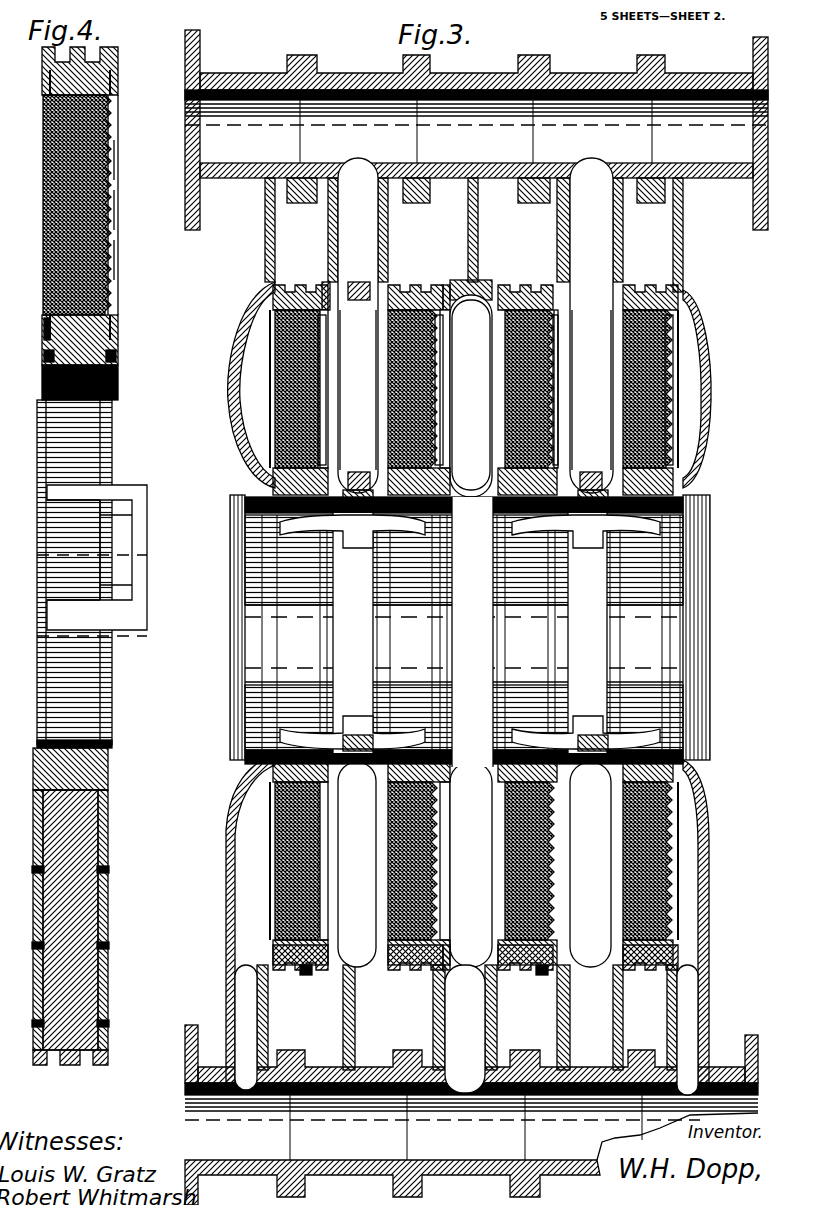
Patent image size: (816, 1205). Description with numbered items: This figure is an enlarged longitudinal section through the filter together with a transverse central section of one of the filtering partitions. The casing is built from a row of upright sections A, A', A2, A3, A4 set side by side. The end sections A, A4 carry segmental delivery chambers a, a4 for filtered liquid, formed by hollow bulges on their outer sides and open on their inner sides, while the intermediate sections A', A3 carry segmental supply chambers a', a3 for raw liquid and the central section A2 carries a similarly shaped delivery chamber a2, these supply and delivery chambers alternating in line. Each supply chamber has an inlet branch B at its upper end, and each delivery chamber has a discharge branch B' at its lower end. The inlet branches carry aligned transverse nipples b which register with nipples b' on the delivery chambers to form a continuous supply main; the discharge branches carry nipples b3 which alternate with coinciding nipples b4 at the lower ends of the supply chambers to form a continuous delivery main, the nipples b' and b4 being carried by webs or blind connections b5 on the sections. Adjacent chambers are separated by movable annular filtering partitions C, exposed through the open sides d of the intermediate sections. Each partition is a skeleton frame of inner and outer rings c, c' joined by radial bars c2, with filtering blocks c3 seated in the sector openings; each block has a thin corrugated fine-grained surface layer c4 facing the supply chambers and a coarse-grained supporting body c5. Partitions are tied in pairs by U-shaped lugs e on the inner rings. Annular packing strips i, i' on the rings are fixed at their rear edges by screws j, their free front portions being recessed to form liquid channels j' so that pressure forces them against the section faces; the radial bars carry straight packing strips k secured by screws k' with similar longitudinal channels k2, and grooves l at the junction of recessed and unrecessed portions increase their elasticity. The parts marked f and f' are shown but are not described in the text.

In FIG. 3, the end section A is at (248, 385).
In FIG. 3, the intermediate section A' is at (357, 640).
In FIG. 3, the central section A2 is at (471, 631).
In FIG. 3, the intermediate section A3 is at (590, 639).
In FIG. 3, the end section A4 is at (707, 389).
In FIG. 3, the delivery chamber a is at (258, 625).
In FIG. 3, the supply chamber a' is at (358, 596).
In FIG. 3, the delivery chamber a2 is at (471, 590).
In FIG. 3, the supply chamber a3 is at (591, 596).
In FIG. 3, the delivery chamber a4 is at (690, 625).
In FIG. 3, the inlet branch B is at (475, 325).
In FIG. 3, the discharge branch B' is at (466, 1030).
In FIG. 3, the transverse nipple b is at (476, 151).
In FIG. 3, the nipple b' is at (476, 109).
In FIG. 3, the transverse nipple b3 is at (471, 1099).
In FIG. 3, the nipple b4 is at (471, 1150).
In FIG. 3, the web b5 is at (683, 238).
In FIG. 3, the inner ring c is at (475, 634).
In FIG. 4, the inner ring c is at (92, 71).
In FIG. 3, the outer ring c' is at (470, 634).
In FIG. 4, the outer ring c' is at (92, 357).
In FIG. 3, the radial bar c2 is at (520, 282).
In FIG. 4, the radial bar c2 is at (44, 912).
In FIG. 3, the filtering block c3 is at (326, 420).
In FIG. 4, the filtering block c3 is at (116, 252).
In FIG. 3, the corrugated surface layer c4 is at (326, 356).
In FIG. 4, the corrugated surface layer c4 is at (116, 132).
In FIG. 3, the coarse-grained body c5 is at (446, 352).
In FIG. 4, the coarse-grained body c5 is at (116, 164).
In FIG. 4, the filtering partition C is at (86, 574).
In FIG. 3, the open side d is at (600, 466).
In FIG. 3, the U-shaped lug e is at (585, 722).
In FIG. 4, the U-shaped lug e is at (147, 603).
In FIG. 3, the lug f is at (322, 282).
In FIG. 3, the lug f' is at (424, 987).
In FIG. 3, the annular packing strip i is at (468, 952).
In FIG. 4, the annular packing strip i is at (64, 568).
In FIG. 3, the annular packing strip i' is at (500, 771).
In FIG. 4, the annular packing strip i' is at (88, 433).
In FIG. 3, the screw j is at (250, 317).
In FIG. 4, the screw j is at (118, 359).
In FIG. 3, the liquid channel j' is at (474, 544).
In FIG. 4, the liquid channel j' is at (33, 326).
In FIG. 4, the straight packing strip k is at (83, 920).
In FIG. 4, the screw k' is at (87, 793).
In FIG. 4, the longitudinal liquid channel k2 is at (116, 204).
In FIG. 3, the groove l is at (475, 495).
In FIG. 4, the groove l is at (44, 356).